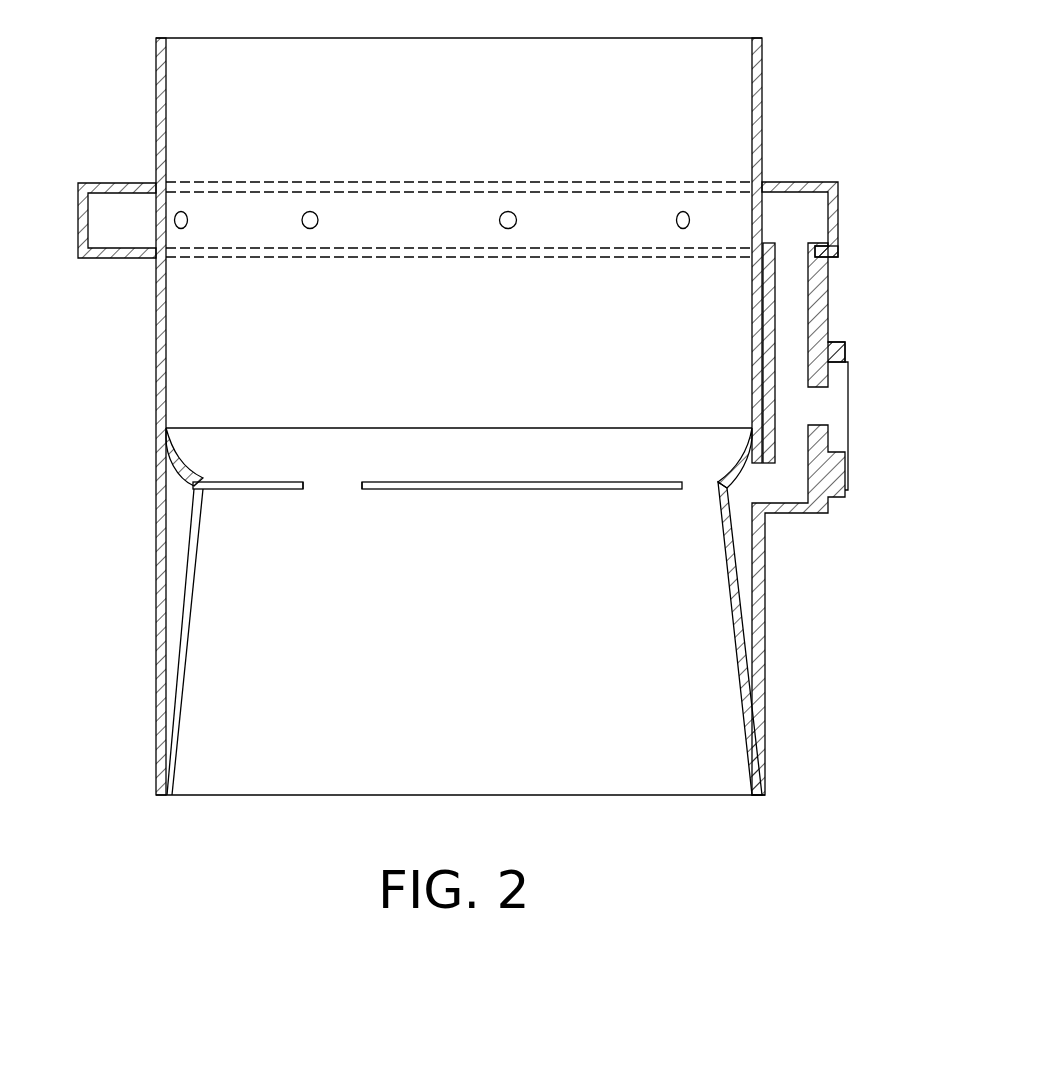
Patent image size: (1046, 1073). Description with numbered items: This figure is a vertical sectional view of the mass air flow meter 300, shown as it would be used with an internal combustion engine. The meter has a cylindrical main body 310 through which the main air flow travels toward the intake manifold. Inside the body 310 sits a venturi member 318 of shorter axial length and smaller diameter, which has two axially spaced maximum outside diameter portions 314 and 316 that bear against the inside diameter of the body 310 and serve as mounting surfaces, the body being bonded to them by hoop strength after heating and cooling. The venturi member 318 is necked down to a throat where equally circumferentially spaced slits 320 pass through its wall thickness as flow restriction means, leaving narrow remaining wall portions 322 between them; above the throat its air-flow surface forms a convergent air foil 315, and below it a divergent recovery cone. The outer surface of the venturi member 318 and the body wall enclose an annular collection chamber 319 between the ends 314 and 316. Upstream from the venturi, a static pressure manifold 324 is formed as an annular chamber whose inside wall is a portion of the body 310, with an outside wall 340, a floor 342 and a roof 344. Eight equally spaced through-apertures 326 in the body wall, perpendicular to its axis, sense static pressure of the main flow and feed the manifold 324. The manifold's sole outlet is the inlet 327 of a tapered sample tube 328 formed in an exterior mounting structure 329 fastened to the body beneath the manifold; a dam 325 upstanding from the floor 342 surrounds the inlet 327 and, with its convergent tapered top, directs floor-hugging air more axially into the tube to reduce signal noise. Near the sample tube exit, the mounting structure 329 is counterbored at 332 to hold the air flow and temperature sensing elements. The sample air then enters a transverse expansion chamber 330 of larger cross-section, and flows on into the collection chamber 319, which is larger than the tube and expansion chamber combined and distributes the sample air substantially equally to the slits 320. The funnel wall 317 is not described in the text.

The mass air flow meter 300 is at (786, 81).
The main body 310 is at (156, 76).
The maximum outside diameter portion 314 is at (752, 393).
The convergent air foil 315 is at (198, 452).
The maximum outside diameter portion 316 is at (765, 745).
The funnel wall 317 is at (183, 682).
The venturi member 318 is at (546, 420).
The annular collection chamber 319 is at (181, 488).
The slits 320 is at (232, 490).
The remaining wall portions 322 is at (345, 484).
The static pressure manifold 324 is at (835, 178).
The dam 325 is at (840, 250).
The through-apertures 326 is at (310, 212).
The inlet 327 is at (810, 241).
The sample tube 328 is at (808, 333).
The exterior mounting structure 329 is at (846, 349).
The transverse expansion chamber 330 is at (790, 486).
The counterbore 332 is at (849, 416).
The outside wall 340 is at (80, 212).
The floor 342 is at (470, 256).
The roof 344 is at (456, 190).